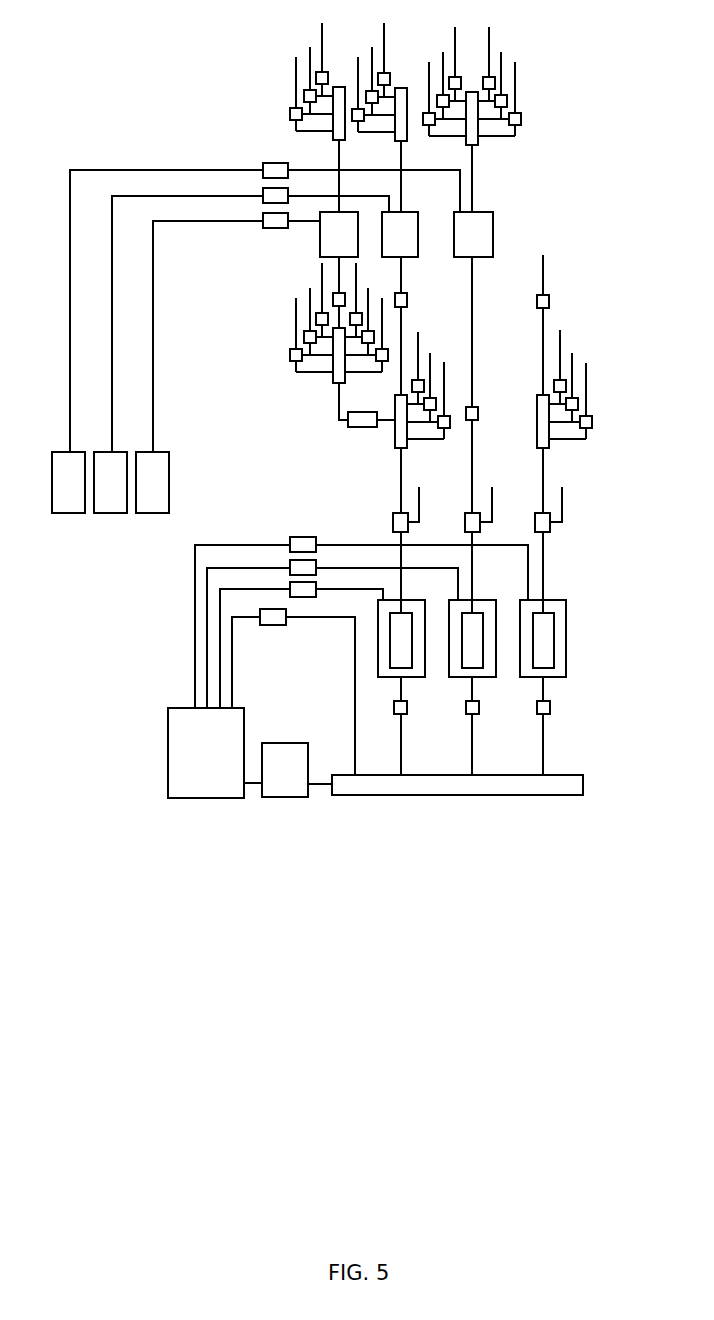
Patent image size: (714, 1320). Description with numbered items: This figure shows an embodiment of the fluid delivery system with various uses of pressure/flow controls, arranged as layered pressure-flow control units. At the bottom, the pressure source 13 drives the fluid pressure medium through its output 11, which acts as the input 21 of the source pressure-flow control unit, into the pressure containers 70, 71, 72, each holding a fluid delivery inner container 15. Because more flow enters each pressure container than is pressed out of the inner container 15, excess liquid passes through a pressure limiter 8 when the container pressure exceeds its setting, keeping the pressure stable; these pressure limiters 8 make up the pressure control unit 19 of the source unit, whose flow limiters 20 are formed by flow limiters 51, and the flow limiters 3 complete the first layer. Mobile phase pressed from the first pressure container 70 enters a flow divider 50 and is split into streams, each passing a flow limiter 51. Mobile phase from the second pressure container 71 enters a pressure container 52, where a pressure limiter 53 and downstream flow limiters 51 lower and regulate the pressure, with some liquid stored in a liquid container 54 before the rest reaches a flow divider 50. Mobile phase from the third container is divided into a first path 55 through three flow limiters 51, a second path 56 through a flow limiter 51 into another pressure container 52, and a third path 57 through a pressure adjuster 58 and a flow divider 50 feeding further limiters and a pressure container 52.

The flow limiter 3 is at (408, 707).
The pressure limiter 8 is at (316, 540).
The output 11 is at (322, 774).
The pressure source 13 is at (288, 797).
The fluid delivery inner container 15 is at (412, 635).
The pressure control unit 19 is at (277, 158).
The flow limiter 20 is at (518, 94).
The input 21 is at (484, 289).
The flow divider 50 is at (402, 142).
The flow limiter 51 is at (390, 77).
The pressure container 52 is at (418, 212).
The pressure limiter 53 is at (288, 168).
The liquid container 54 is at (60, 513).
The first path 55 is at (445, 449).
The second path 56 is at (415, 313).
The third path 57 is at (323, 407).
The pressure adjuster 58 is at (358, 427).
The first pressure container 70 is at (566, 608).
The second pressure container 71 is at (483, 678).
The outlet line 72 is at (381, 678).